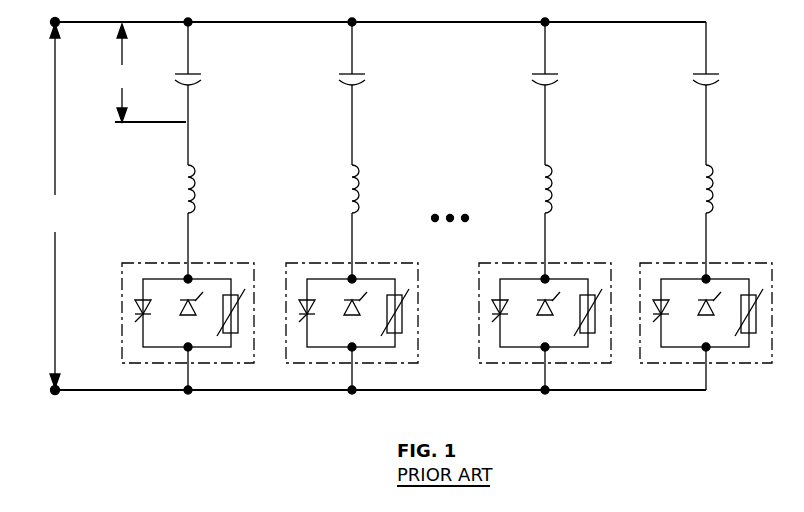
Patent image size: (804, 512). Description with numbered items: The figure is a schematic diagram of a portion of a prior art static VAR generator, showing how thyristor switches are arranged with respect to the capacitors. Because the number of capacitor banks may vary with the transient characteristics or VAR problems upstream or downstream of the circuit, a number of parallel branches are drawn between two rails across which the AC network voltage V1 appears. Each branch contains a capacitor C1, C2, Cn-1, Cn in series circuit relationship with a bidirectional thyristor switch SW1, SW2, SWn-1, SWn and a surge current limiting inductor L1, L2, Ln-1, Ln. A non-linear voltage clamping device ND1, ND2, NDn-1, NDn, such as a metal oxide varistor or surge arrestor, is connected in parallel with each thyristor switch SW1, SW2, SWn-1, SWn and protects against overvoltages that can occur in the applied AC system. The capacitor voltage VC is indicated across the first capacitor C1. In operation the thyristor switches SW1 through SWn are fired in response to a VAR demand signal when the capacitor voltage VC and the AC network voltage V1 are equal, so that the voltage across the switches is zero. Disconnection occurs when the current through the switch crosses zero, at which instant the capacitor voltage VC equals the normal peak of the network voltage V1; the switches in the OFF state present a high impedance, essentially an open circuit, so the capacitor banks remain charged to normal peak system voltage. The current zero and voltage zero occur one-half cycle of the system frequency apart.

The AC network voltage V1 is at (58, 206).
The capacitor voltage VC is at (148, 73).
The capacitor C1 is at (202, 82).
The capacitor C2 is at (366, 82).
The capacitor Cn-1 is at (559, 82).
The capacitor Cn is at (720, 82).
The surge current limiting inductor L1 is at (196, 182).
The surge current limiting inductor L2 is at (360, 182).
The surge current limiting inductor Ln-1 is at (553, 182).
The surge current limiting inductor Ln is at (714, 182).
The non-linear voltage clamping device ND1 is at (216, 300).
The non-linear voltage clamping device ND2 is at (380, 300).
The non-linear voltage clamping device NDn-1 is at (573, 300).
The non-linear voltage clamping device NDn is at (734, 300).
The bidirectional thyristor switch SW1 is at (193, 326).
The bidirectional thyristor switch SW2 is at (357, 326).
The bidirectional thyristor switch SWn-1 is at (559, 326).
The bidirectional thyristor switch SWn is at (711, 326).